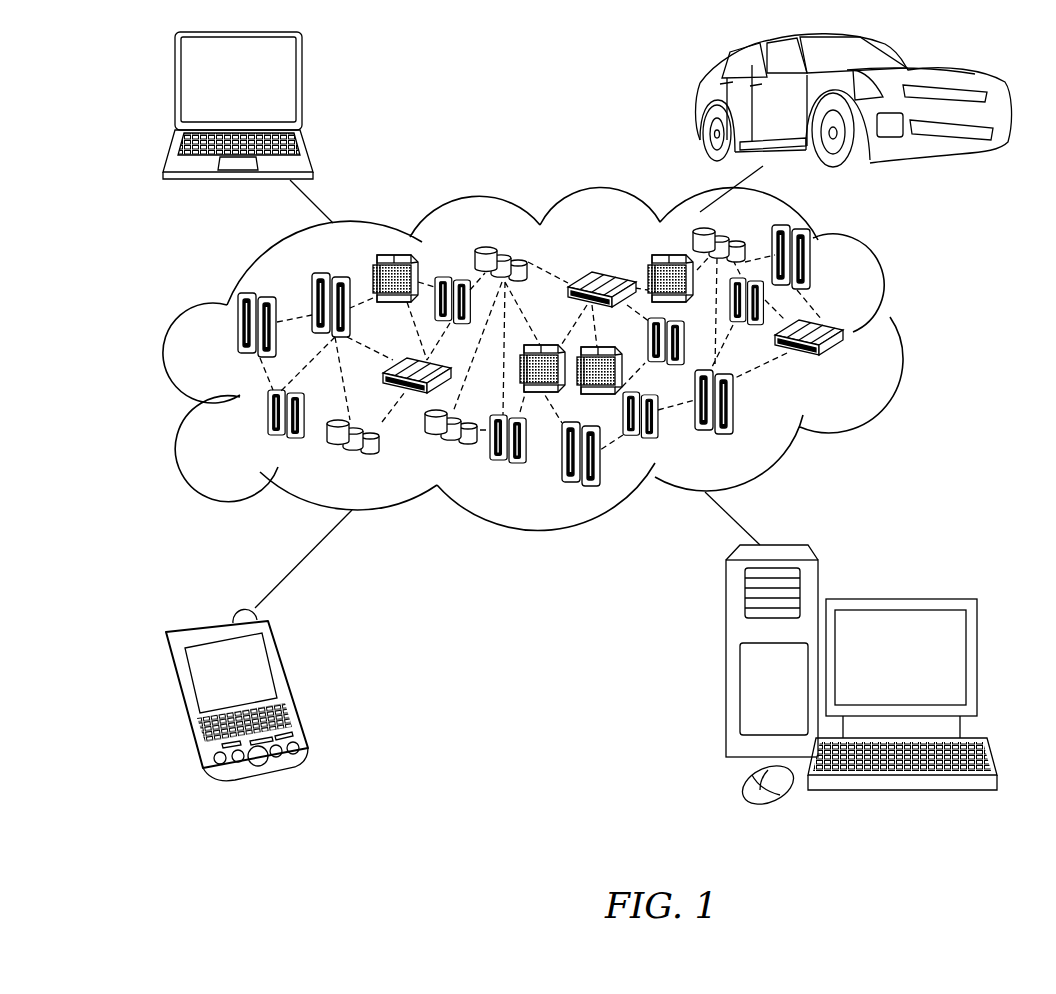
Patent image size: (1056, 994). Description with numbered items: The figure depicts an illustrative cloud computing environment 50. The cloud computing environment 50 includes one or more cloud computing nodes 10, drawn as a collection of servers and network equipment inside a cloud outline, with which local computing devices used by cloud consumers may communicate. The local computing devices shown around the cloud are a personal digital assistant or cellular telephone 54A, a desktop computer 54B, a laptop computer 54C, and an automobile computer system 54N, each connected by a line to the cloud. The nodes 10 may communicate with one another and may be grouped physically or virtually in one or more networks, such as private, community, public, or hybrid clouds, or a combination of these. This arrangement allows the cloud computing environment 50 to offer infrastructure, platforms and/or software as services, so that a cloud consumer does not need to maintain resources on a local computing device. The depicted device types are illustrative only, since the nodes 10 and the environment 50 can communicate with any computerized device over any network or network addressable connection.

The cloud computing node 10 is at (845, 365).
The cloud computing environment 50 is at (898, 334).
The personal digital assistant or cellular telephone 54A is at (292, 687).
The desktop computer 54B is at (898, 599).
The laptop computer 54C is at (302, 87).
The automobile computer system 54N is at (702, 101).